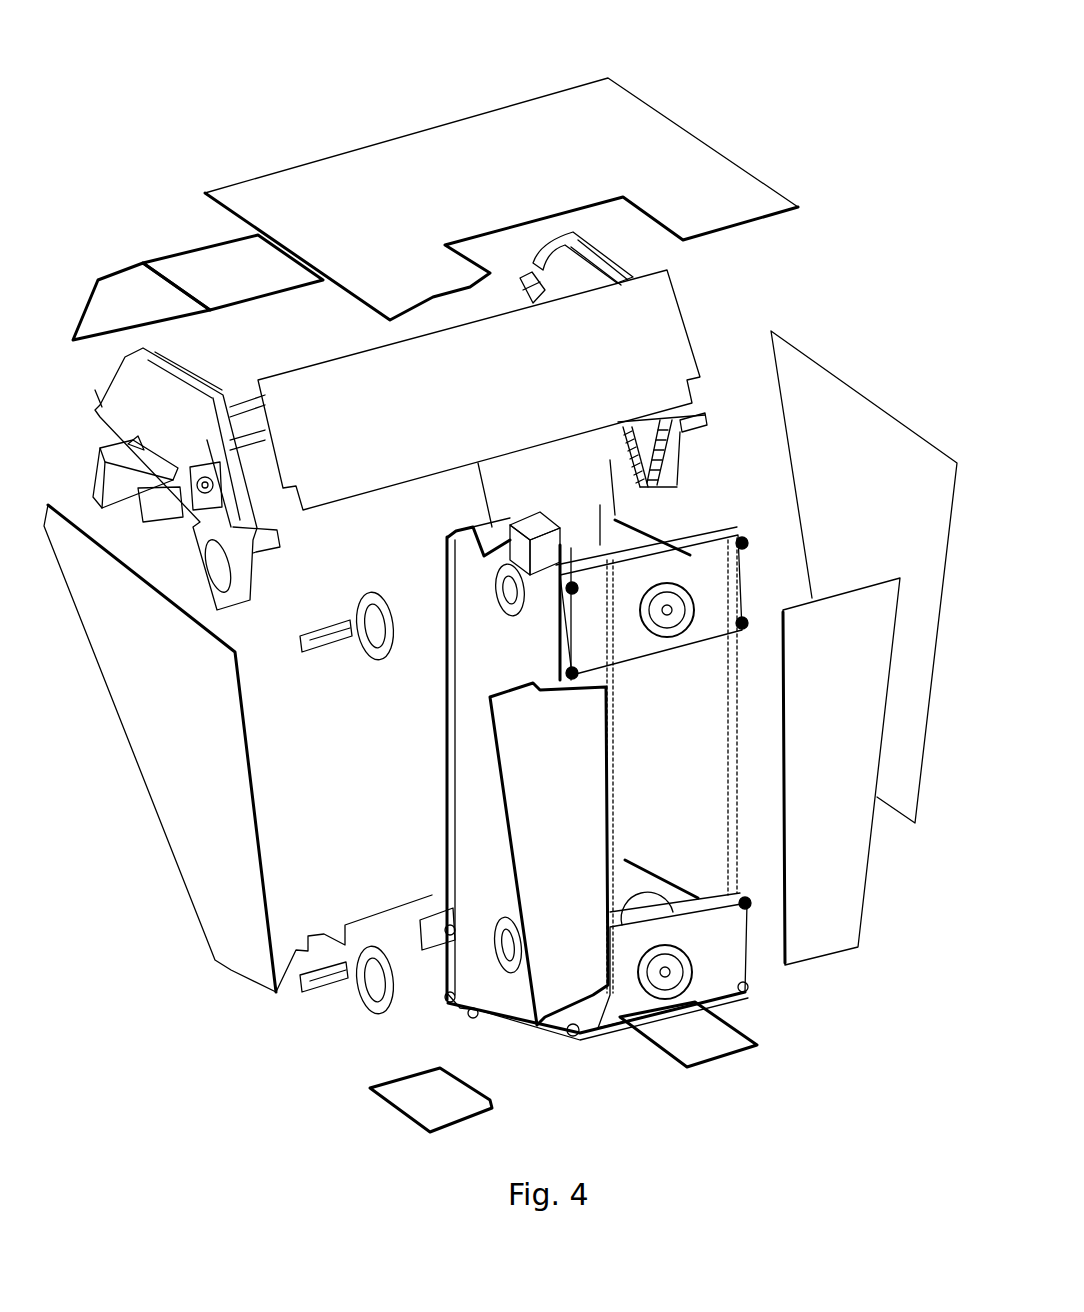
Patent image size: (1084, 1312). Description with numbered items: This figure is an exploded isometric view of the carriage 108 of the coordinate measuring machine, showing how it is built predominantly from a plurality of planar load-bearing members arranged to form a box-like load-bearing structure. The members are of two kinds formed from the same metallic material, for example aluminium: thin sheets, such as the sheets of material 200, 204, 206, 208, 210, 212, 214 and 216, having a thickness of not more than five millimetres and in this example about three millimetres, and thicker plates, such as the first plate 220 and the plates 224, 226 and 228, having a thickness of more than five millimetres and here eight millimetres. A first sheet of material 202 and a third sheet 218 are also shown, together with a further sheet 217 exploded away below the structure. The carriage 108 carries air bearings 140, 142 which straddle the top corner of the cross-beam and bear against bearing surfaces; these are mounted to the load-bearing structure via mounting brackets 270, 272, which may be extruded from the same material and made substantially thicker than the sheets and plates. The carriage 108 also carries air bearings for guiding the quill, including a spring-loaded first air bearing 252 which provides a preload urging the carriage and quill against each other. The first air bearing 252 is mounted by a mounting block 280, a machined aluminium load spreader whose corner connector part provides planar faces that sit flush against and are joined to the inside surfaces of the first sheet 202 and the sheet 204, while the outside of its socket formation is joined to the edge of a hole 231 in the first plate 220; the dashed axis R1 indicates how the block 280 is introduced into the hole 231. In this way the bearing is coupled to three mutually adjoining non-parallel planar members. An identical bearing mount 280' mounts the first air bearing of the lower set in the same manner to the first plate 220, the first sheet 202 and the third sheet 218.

The carriage 108 is at (785, 143).
The second sheet of material 204 is at (501, 199).
The sheet of material 210 is at (233, 272).
The sheet of material 212 is at (128, 308).
The mounting bracket 272 is at (580, 283).
The sheet of material 208 is at (479, 390).
The sheet of material 216 is at (864, 577).
The sheet of material 206 is at (841, 771).
The sheet of material 200 is at (238, 748).
The mounting bracket 270 is at (187, 479).
The air bearing 140 is at (98, 478).
The air bearing 142 is at (158, 518).
The first air bearing 252 is at (540, 530).
The sheet of material 214 is at (540, 489).
The first plate 220 is at (584, 788).
The hole 231 is at (488, 588).
The mounting block 280 is at (340, 613).
The bearing mount 280' is at (329, 996).
The pivot axis R1 is at (498, 591).
The plate 226 is at (654, 607).
The plate 224 is at (672, 765).
The plate 228 is at (674, 960).
The first sheet of material 202 is at (549, 854).
The bottom plate 217 is at (700, 1037).
The third sheet 218 is at (458, 1093).